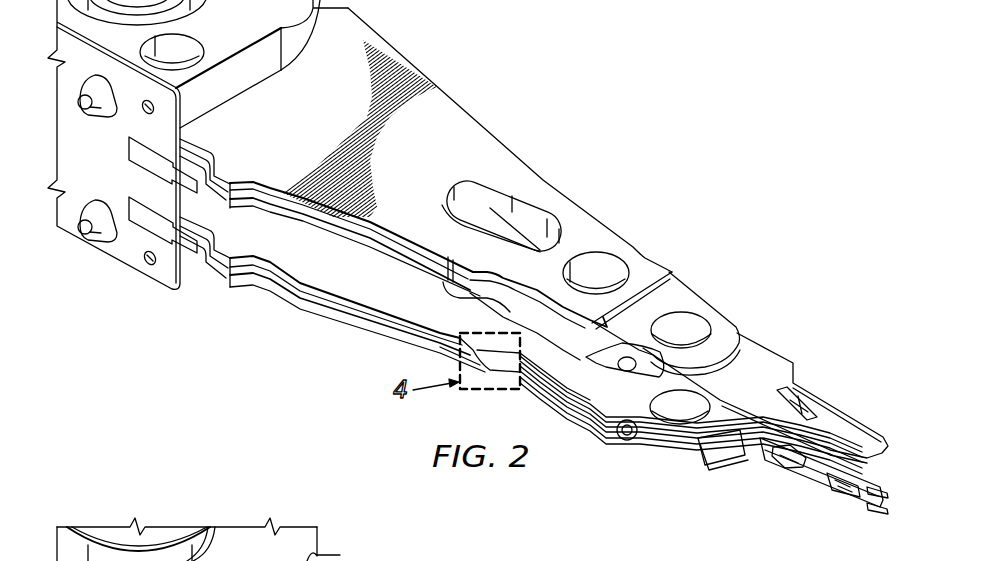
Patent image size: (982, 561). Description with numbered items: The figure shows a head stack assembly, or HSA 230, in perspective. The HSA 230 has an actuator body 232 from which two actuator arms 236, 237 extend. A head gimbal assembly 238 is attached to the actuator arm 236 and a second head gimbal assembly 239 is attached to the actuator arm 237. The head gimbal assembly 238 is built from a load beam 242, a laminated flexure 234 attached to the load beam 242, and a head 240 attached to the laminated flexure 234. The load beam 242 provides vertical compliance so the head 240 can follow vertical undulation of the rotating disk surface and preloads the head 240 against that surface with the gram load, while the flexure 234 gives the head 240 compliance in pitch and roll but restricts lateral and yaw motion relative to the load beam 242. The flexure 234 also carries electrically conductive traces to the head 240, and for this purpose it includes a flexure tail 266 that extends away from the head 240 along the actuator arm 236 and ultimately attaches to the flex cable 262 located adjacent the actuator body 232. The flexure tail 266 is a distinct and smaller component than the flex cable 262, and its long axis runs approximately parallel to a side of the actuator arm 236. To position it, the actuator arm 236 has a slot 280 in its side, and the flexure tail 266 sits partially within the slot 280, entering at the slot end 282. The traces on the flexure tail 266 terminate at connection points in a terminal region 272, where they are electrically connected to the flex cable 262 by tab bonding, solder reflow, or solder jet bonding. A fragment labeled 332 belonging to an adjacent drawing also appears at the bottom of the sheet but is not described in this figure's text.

The head stack assembly 230 is at (545, 88).
The actuator body 232 is at (268, 23).
The laminated flexure 234 is at (790, 470).
The actuator arm 236 is at (322, 282).
The actuator arm 237 is at (471, 129).
The head gimbal assembly 238 is at (840, 507).
The head gimbal assembly 239 is at (834, 421).
The head 240 is at (838, 480).
The load beam 242 is at (745, 457).
The flex cable 262 is at (165, 277).
The flexure tail 266 is at (590, 425).
The terminal region 272 is at (147, 218).
The slot 280 is at (380, 313).
The slot end 282 is at (500, 362).
The actuator body 332 is at (198, 539).